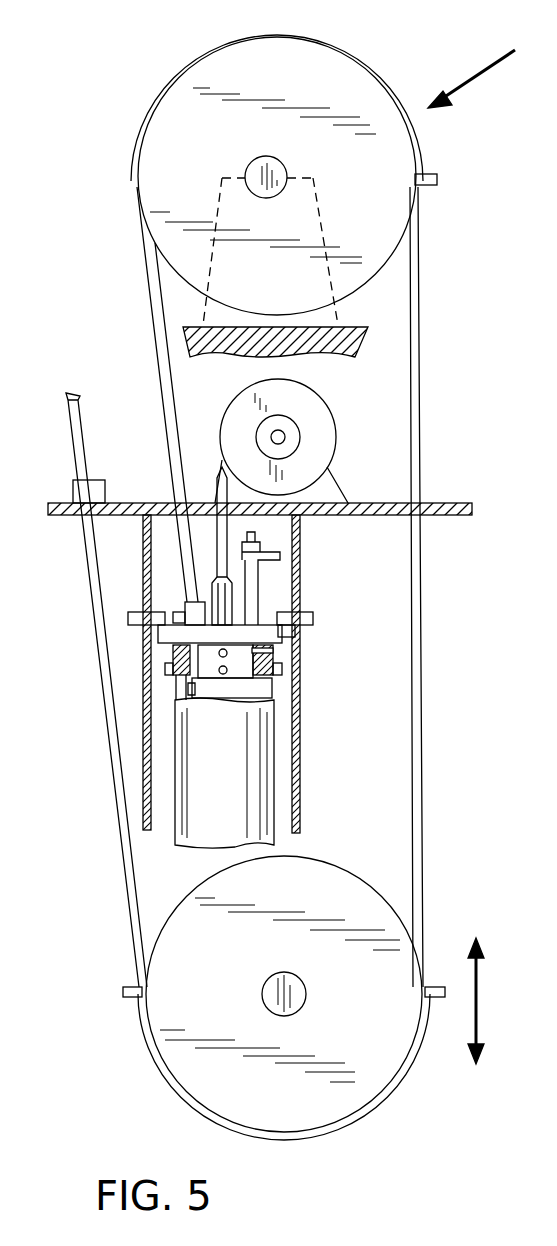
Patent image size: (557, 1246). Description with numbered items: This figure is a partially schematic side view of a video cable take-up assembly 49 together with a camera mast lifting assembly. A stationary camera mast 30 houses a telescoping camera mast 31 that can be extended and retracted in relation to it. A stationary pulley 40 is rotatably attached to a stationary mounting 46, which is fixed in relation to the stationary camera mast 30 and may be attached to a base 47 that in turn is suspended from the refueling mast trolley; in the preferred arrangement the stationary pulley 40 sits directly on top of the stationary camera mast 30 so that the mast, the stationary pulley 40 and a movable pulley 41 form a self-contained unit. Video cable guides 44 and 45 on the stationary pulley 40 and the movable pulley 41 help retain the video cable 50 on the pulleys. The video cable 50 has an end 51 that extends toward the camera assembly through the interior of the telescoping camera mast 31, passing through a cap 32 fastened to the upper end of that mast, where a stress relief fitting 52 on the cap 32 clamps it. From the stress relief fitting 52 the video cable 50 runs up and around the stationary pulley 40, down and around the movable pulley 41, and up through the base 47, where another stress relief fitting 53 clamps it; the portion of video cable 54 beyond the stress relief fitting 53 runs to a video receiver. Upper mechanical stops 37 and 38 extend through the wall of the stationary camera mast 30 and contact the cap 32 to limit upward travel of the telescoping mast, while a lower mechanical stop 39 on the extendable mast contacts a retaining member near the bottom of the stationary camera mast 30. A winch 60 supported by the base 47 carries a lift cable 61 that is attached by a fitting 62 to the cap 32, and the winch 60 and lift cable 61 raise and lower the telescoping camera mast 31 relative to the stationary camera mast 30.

The stationary camera mast 30 is at (300, 730).
The telescoping camera mast 31 is at (277, 837).
The cap 32 is at (267, 637).
The upper mechanical stop 37 is at (128, 626).
The upper mechanical stop 38 is at (312, 620).
The lower mechanical stop 39 is at (280, 553).
The stationary pulley 40 is at (327, 100).
The movable pulley 41 is at (210, 1065).
The video cable guide 44 is at (435, 173).
The video cable guide 45 is at (135, 1000).
The stationary mounting 46 is at (350, 340).
The base 47 is at (443, 503).
The video cable take-up assembly 49 is at (491, 73).
The video cable 50 is at (418, 630).
The end of video cable 51 is at (188, 697).
The stress relief fitting 52 is at (176, 608).
The stress relief fitting 53 is at (95, 482).
The portion of video cable 54 is at (80, 413).
The winch 60 is at (313, 417).
The lift cable 61 is at (218, 463).
The fitting 62 is at (220, 612).